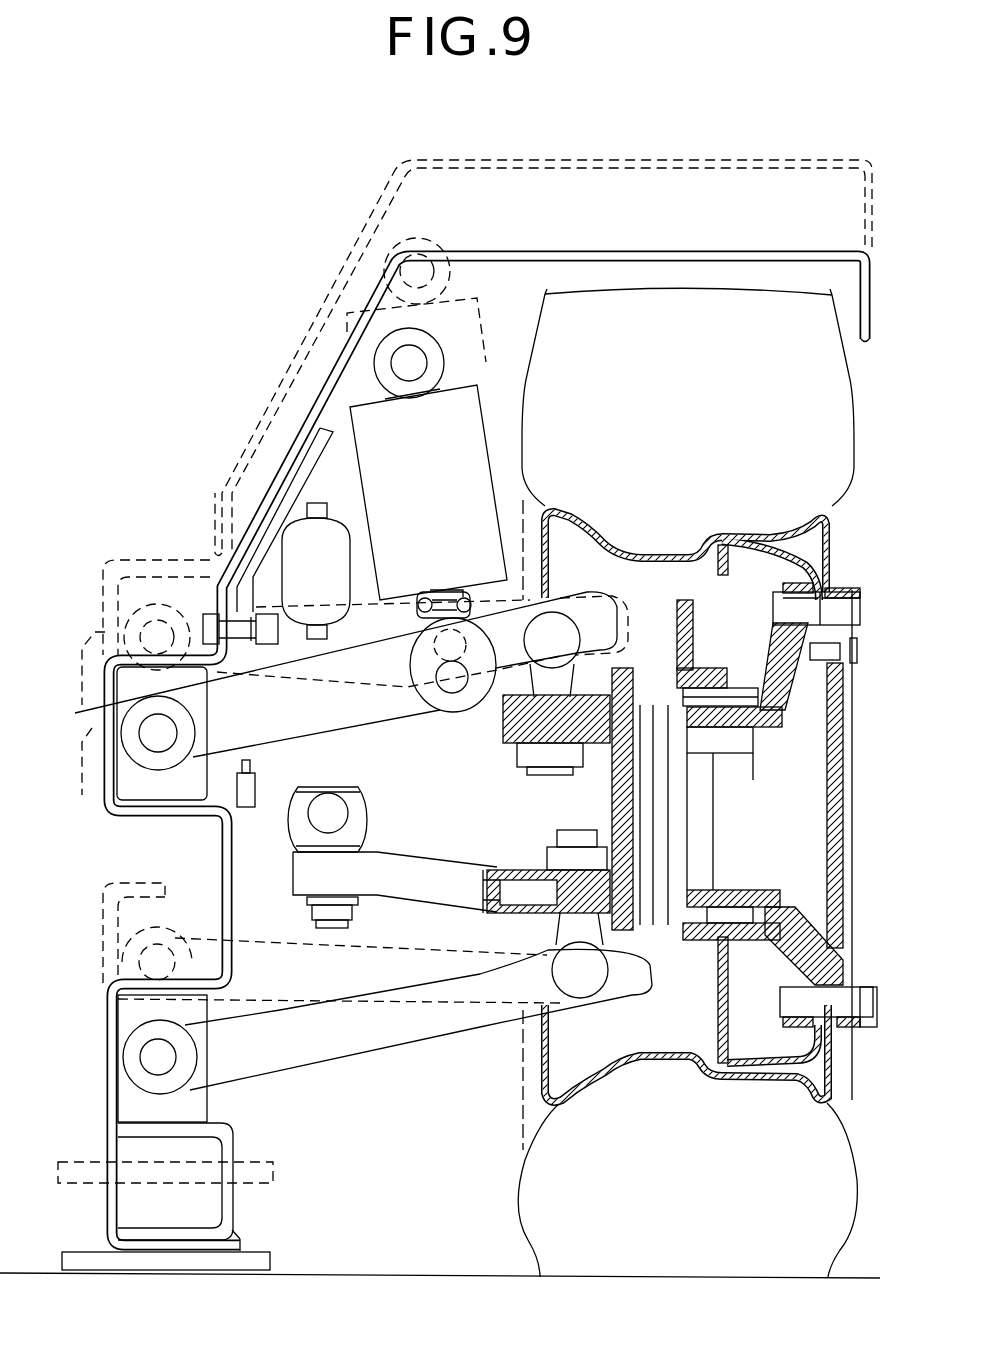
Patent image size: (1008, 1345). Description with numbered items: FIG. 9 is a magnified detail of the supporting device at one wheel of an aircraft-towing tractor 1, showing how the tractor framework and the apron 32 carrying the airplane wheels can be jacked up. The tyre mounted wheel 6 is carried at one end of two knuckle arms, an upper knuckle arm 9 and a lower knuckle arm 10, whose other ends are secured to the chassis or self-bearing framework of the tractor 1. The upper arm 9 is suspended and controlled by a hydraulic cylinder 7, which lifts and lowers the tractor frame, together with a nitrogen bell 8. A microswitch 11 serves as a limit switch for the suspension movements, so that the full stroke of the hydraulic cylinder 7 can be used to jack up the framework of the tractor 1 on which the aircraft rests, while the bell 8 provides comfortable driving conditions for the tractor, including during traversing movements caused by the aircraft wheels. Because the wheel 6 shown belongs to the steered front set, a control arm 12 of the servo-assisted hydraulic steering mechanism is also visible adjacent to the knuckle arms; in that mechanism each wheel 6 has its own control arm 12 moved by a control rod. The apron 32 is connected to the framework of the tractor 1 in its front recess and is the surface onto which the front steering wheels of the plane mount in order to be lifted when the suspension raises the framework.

The tractor 1 is at (750, 255).
The tyre mounted wheel 6 is at (601, 307).
The hydraulic cylinder 7 is at (362, 405).
The nitrogen bell 8 is at (297, 543).
The upper knuckle arm 9 is at (76, 713).
The lower knuckle arm 10 is at (213, 1050).
The microswitch 11 is at (237, 790).
The control arm 12 is at (436, 872).
The apron 32 is at (95, 1262).